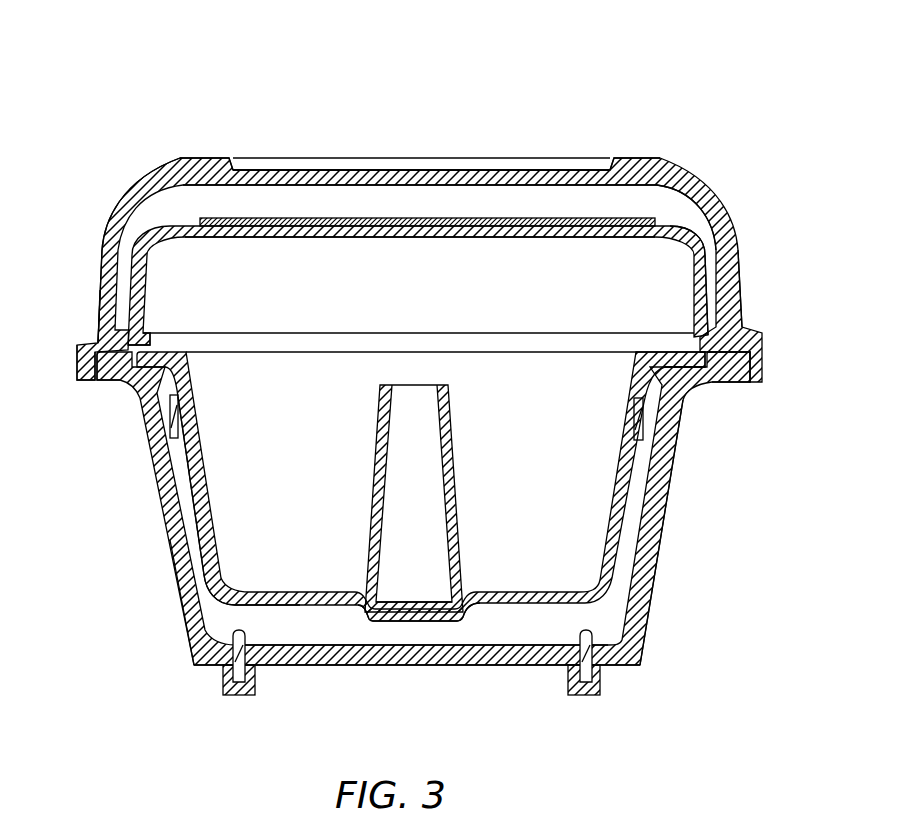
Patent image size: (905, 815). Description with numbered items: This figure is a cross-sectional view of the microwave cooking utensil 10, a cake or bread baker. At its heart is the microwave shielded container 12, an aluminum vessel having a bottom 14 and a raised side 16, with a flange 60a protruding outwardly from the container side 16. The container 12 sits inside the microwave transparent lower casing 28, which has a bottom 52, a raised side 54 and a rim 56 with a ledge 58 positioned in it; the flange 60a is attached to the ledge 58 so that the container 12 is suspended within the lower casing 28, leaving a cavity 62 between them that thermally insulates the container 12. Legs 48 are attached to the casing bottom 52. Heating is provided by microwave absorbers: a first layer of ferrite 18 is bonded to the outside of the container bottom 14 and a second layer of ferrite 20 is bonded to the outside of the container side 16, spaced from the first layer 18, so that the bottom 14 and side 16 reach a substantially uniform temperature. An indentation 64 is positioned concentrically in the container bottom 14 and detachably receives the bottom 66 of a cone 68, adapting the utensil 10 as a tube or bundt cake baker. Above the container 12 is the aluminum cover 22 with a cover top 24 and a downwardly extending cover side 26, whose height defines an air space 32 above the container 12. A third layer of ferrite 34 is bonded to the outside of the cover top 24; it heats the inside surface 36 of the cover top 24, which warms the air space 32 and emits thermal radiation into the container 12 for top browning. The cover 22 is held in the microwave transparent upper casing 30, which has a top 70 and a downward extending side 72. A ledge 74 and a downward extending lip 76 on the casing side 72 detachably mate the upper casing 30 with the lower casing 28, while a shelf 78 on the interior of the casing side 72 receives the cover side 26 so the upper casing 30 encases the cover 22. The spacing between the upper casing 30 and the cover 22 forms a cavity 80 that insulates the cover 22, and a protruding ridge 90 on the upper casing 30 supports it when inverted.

The microwave cooking utensil 10 is at (670, 108).
The microwave shielded container 12 is at (186, 469).
The container bottom 14 is at (230, 610).
The container side 16 is at (202, 530).
The first layer of ferrite 18 is at (328, 607).
The second layer of ferrite 20 is at (173, 424).
The cover 22 is at (153, 231).
The cover top 24 is at (670, 257).
The cover side 26 is at (726, 225).
The lower casing 28 is at (655, 578).
The upper casing 30 is at (745, 288).
The air space 32 is at (707, 193).
The third layer of ferrite 34 is at (410, 218).
The inside surface of cover top 36 is at (235, 240).
The legs 48 is at (592, 697).
The lower casing bottom 52 is at (413, 660).
The lower casing raised side 54 is at (653, 520).
The rim 56 is at (113, 385).
The ledge 58 is at (700, 380).
The rim lip of inner container 60a is at (672, 357).
The cavity 62 is at (190, 632).
The indentation 64 is at (463, 608).
The cone bottom 66 is at (395, 600).
The cone 68 is at (452, 448).
The upper casing top 70 is at (268, 173).
The upper casing side 72 is at (103, 247).
The ledge 74 is at (103, 335).
The downward extending lip 76 is at (82, 352).
The shelf 78 is at (148, 345).
The cavity 80 is at (330, 197).
The ridge 90 is at (669, 157).